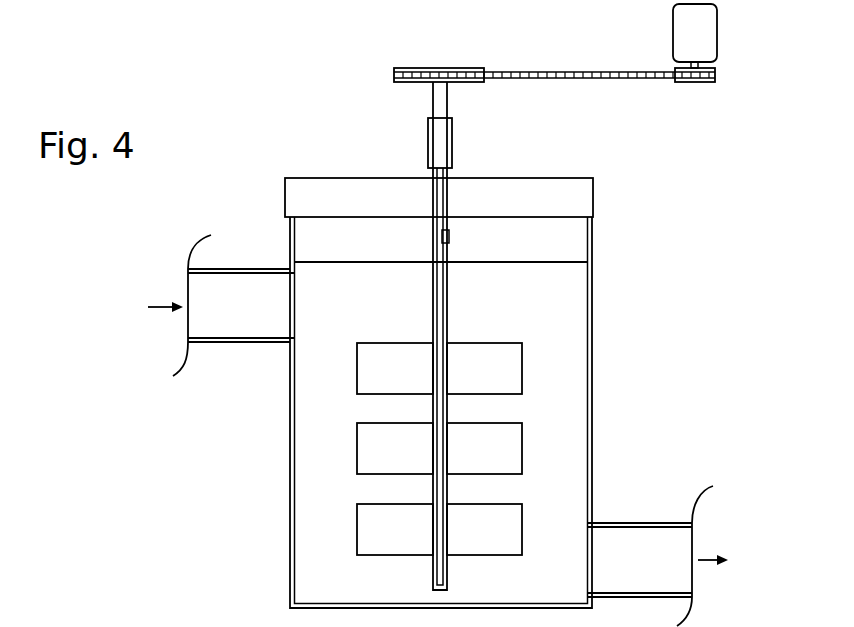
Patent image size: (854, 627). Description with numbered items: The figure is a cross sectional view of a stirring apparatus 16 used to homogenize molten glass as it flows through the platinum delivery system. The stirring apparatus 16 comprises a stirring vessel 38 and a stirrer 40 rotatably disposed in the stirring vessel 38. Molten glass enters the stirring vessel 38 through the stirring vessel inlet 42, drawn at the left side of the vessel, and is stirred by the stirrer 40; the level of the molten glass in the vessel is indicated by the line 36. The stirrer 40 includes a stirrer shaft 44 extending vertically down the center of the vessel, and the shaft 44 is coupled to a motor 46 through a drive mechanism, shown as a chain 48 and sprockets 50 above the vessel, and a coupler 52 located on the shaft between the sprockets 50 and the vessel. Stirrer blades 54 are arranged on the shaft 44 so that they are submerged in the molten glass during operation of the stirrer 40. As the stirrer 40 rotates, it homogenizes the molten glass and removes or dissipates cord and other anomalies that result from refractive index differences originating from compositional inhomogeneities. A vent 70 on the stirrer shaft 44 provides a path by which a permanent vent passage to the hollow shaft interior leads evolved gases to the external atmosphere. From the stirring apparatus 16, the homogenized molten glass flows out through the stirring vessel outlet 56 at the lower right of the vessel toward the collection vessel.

The stirring apparatus 16 is at (656, 357).
The liquid level 36 is at (410, 258).
The stirring vessel 38 is at (592, 242).
The stirrer 40 is at (338, 413).
The stirring vessel inlet 42 is at (272, 345).
The stirrer shaft 44 is at (448, 323).
The motor 46 is at (670, 35).
The chain 48 is at (577, 68).
The sprockets 50 is at (407, 83).
The coupler 52 is at (452, 148).
The stirrer blades 54 is at (407, 342).
The stirring vessel outlet 56 is at (665, 522).
The vent 70 is at (450, 235).